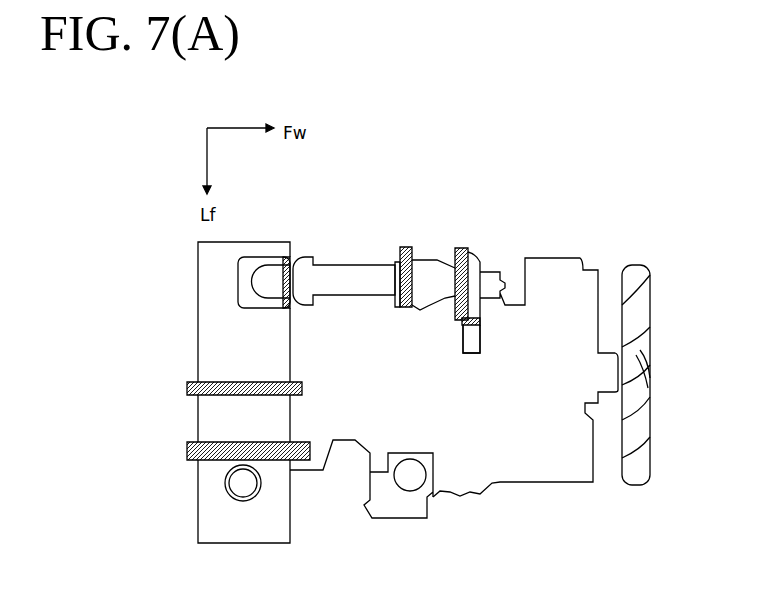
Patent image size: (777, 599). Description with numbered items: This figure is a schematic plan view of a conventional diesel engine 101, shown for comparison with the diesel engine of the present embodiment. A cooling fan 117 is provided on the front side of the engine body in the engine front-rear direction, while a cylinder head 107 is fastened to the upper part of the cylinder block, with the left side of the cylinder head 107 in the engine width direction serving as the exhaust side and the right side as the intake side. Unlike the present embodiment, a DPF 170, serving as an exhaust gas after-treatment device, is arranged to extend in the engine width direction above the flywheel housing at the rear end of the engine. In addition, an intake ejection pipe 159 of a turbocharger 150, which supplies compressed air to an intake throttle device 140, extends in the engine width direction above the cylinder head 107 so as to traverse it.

The conventional diesel engine 101 is at (455, 348).
The cylinder head 107 is at (555, 430).
The cooling fan 117 is at (641, 420).
The intake throttle device 140 is at (395, 507).
The turbocharger 150 is at (447, 250).
The intake ejection pipe 159 is at (480, 337).
The DPF 170 is at (200, 338).